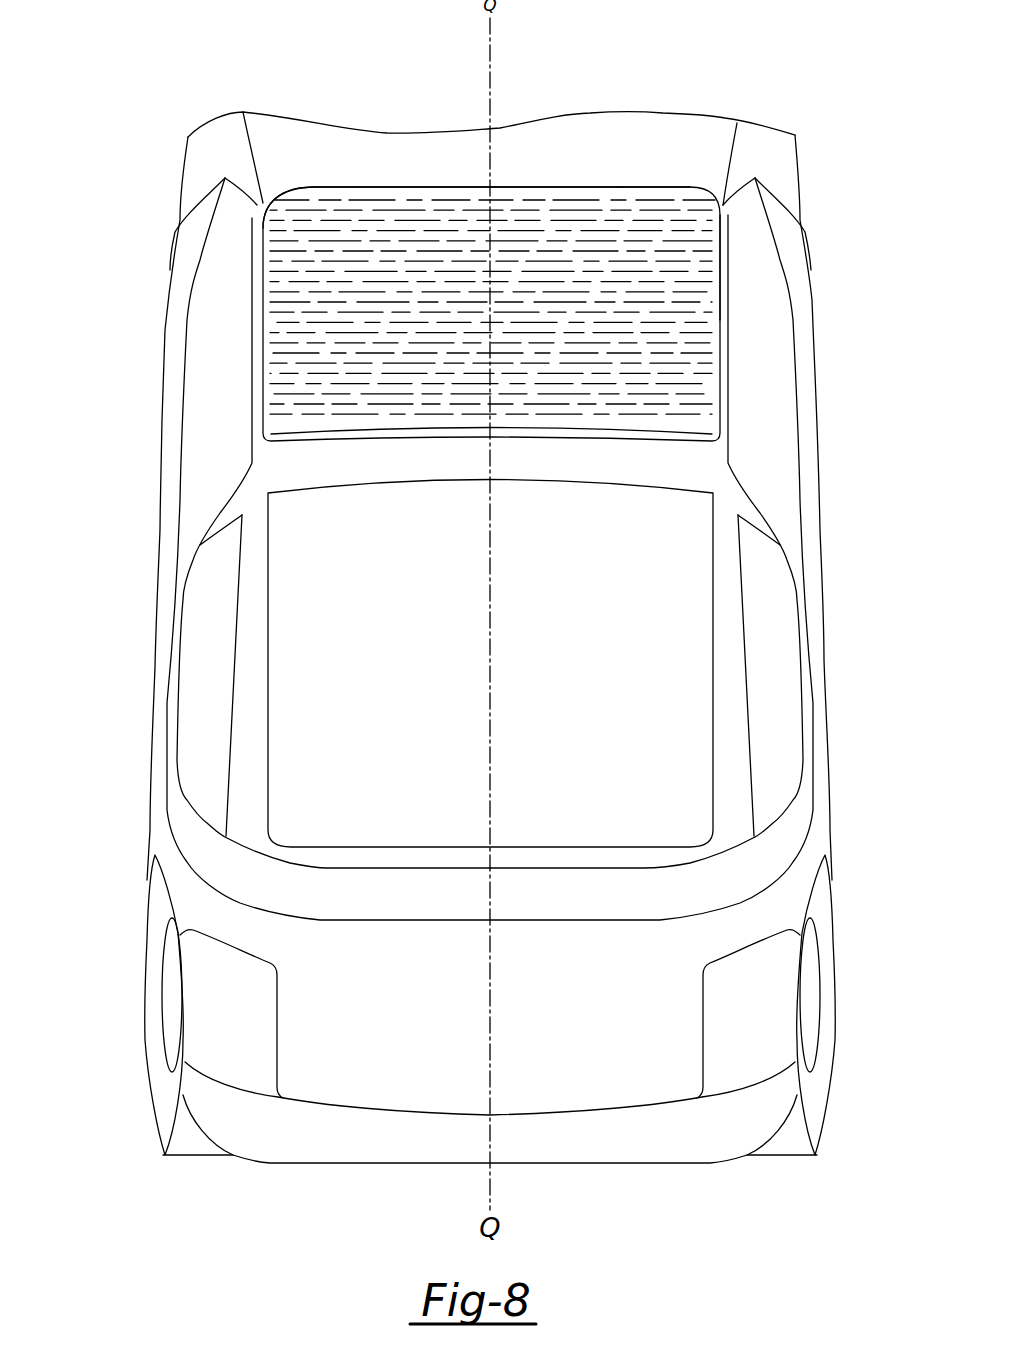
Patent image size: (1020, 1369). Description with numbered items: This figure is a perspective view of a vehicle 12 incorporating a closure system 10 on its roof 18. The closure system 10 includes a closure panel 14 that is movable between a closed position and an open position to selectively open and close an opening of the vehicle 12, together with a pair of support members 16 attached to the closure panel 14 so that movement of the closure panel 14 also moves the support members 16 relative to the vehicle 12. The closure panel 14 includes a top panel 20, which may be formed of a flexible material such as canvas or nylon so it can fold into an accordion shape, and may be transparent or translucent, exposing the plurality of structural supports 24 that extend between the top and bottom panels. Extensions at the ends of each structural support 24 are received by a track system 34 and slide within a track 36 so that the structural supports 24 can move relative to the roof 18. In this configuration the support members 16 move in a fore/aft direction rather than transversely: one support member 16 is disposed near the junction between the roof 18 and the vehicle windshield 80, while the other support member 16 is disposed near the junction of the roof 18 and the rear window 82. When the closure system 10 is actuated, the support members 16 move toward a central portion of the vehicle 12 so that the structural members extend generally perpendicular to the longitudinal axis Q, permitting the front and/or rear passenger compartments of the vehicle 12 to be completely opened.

The closure system 10 is at (583, 252).
The vehicle 12 is at (160, 140).
The closure panel 14 is at (722, 254).
The support members 16 is at (400, 180).
The roof 18 is at (250, 492).
The top panel 20 is at (719, 208).
The structural supports 24 is at (658, 200).
The track system 34 is at (568, 192).
The track 36 is at (330, 190).
The vehicle windshield 80 is at (637, 140).
The rear window 82 is at (628, 653).